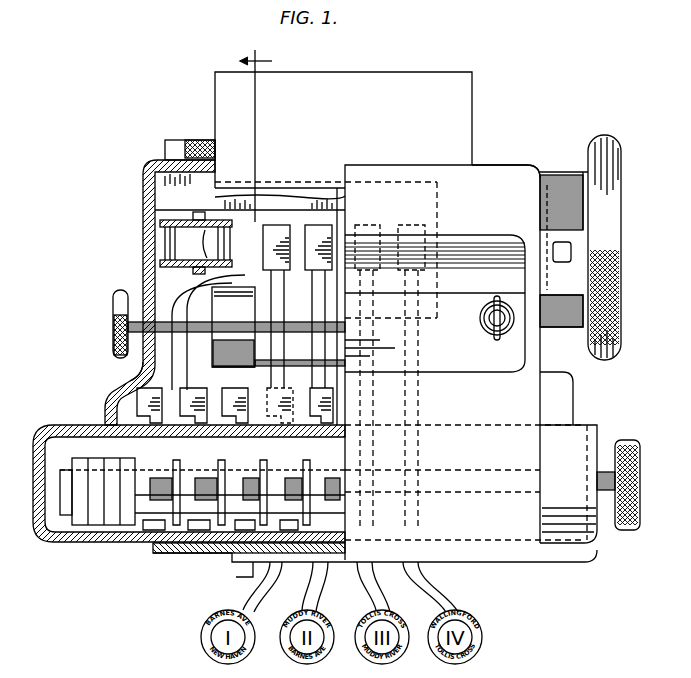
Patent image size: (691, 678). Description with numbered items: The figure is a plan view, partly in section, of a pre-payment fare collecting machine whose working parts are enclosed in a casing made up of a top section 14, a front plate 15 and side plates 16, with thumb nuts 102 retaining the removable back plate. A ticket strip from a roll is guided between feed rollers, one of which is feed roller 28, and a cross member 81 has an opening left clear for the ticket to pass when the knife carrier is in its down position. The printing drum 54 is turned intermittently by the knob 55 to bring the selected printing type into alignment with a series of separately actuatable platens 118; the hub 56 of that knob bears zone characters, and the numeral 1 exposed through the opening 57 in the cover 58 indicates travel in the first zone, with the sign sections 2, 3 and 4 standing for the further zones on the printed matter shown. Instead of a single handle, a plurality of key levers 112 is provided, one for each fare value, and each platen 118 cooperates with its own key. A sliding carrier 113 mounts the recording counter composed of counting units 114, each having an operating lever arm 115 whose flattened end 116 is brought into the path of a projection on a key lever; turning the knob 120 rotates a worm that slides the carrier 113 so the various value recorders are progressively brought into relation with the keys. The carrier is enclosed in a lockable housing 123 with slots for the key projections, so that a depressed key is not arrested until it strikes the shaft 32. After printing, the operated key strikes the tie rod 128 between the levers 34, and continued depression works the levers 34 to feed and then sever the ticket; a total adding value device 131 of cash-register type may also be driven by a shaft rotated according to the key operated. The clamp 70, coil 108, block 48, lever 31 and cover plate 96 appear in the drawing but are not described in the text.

The numeral 1 is at (282, 85).
The second zone sign section 2 is at (318, 88).
The third zone sign section / section line 3 is at (247, 304).
The fourth zone sign section 4 is at (390, 86).
The top section 14 is at (442, 362).
The front plate 15 is at (505, 165).
The side plates 16 is at (175, 553).
The feed roller 28 is at (220, 307).
The operating lever 31 is at (110, 335).
The shaft 32 is at (203, 333).
The levers 34 is at (135, 369).
The armature base 48 is at (238, 368).
The printing drum 54 is at (435, 198).
The knob 55 is at (608, 136).
The hub 56 is at (580, 328).
The opening 57 is at (600, 258).
The cover 58 is at (568, 172).
The sign clamp 70 is at (183, 140).
The cross member 81 is at (140, 192).
The cover plate 96 is at (435, 303).
The thumb nuts 102 is at (480, 322).
The solenoid coil 108 is at (142, 244).
The key levers 112 is at (314, 352).
The sliding carrier 113 is at (80, 548).
The counting units 114 is at (252, 508).
The operating lever arm 115 is at (185, 455).
The flattened end 116 is at (137, 412).
The platens 118 is at (288, 265).
The knob 120 is at (632, 530).
The housing 123 is at (50, 425).
The tie rod 128 is at (130, 442).
The total adding value device 131 is at (115, 530).